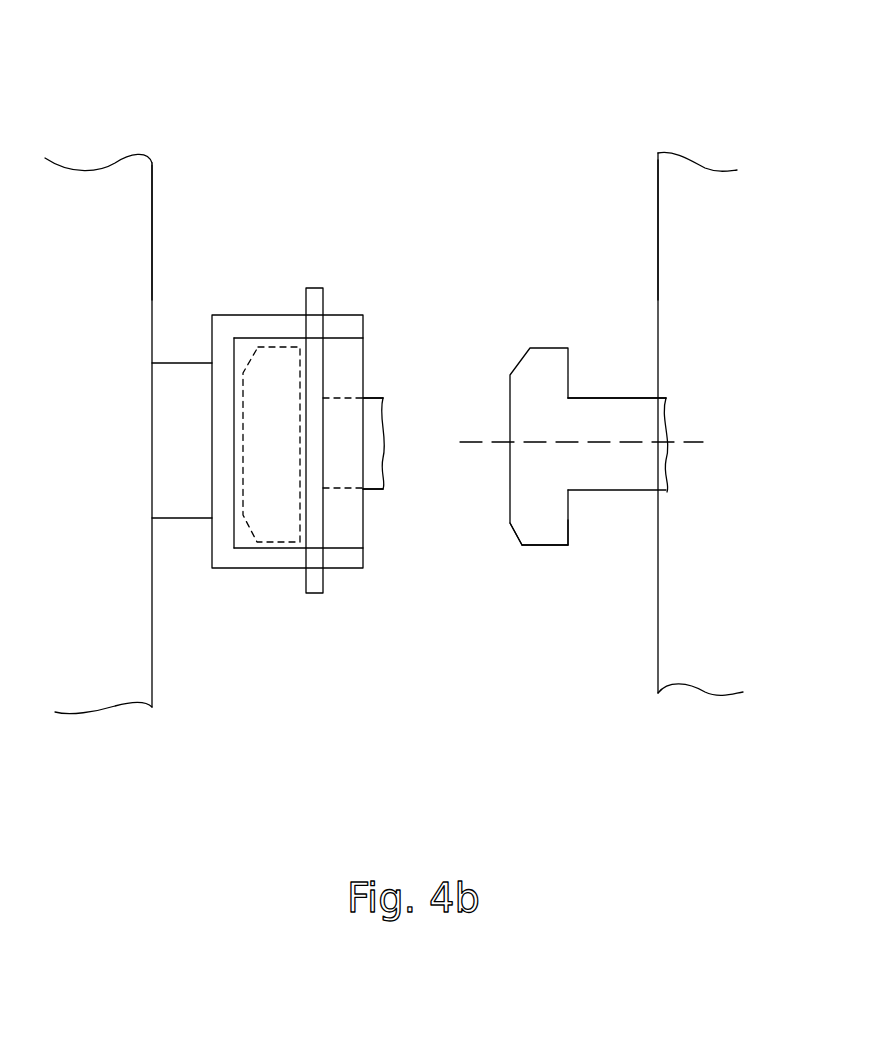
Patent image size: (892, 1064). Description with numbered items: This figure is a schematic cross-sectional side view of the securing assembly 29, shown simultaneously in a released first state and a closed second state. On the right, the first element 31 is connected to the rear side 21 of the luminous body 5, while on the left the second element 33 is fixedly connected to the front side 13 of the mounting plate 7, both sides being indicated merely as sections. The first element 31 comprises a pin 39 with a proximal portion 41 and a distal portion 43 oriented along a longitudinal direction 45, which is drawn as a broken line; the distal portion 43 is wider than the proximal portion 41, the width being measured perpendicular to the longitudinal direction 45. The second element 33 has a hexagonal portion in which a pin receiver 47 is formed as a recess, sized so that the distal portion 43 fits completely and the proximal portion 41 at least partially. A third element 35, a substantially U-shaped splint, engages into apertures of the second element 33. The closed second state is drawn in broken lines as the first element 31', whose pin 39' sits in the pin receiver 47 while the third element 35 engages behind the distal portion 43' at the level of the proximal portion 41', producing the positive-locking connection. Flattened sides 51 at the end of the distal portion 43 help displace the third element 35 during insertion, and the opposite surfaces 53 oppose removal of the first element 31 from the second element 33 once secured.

The luminous body 5 is at (715, 238).
The mounting plate 7 is at (106, 448).
The front side 13 is at (152, 183).
The rear side 21 is at (657, 187).
The securing assembly 29 is at (437, 100).
The first element 31 is at (545, 588).
The first element 31' is at (387, 527).
The second element 33 is at (213, 570).
The third element 35 is at (315, 288).
The pin 39 is at (652, 417).
The pin 39' is at (405, 443).
The proximal portion 41 is at (617, 361).
The proximal portion 41' is at (394, 363).
The distal portion 43 is at (545, 408).
The distal portion 43' is at (271, 444).
The longitudinal direction 45 is at (698, 442).
The pin receiver 47 is at (338, 540).
The flattened sides 51 is at (513, 530).
The surfaces 53 is at (573, 528).